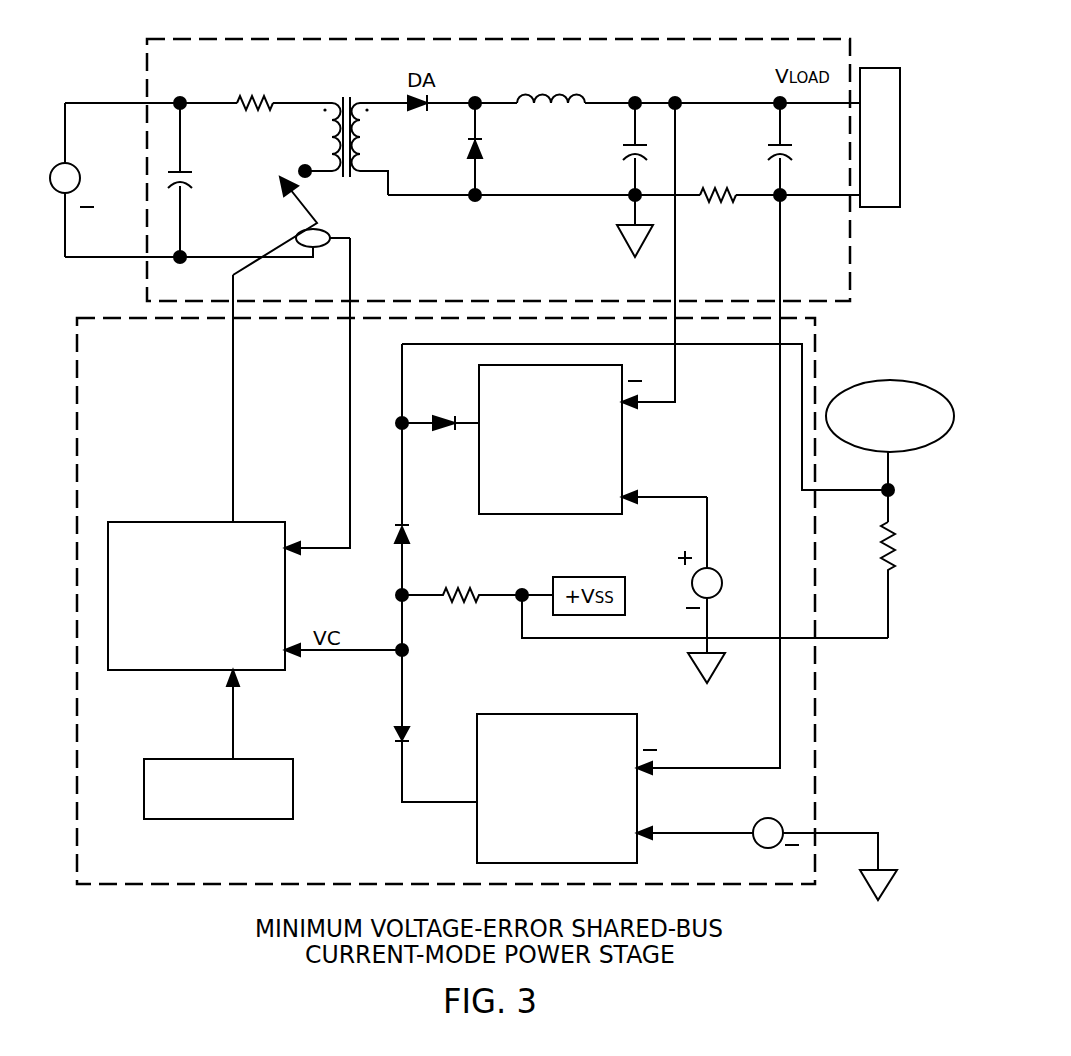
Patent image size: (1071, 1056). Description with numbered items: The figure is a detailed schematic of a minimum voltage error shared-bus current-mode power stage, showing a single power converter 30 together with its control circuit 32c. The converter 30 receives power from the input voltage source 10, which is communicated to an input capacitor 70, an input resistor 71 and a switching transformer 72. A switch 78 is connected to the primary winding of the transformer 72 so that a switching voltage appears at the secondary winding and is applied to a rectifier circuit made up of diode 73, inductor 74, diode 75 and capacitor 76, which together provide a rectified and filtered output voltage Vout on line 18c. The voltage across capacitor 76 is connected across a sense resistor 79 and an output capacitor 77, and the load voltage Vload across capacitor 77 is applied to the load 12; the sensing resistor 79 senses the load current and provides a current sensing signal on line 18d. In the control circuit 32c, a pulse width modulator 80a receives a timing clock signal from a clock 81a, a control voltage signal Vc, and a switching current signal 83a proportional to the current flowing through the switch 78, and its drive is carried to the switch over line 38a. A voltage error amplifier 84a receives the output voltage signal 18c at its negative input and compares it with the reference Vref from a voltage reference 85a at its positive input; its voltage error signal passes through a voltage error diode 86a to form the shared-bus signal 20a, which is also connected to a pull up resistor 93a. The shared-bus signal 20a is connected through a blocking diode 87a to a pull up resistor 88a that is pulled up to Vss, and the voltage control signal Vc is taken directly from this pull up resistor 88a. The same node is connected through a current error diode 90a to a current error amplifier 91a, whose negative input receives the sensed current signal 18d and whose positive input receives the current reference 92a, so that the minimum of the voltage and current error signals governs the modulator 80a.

The input voltage source 10 is at (70, 165).
The load 12 is at (872, 66).
The output voltage signal 18c is at (675, 290).
The output current sensing signal 18d is at (778, 452).
The shared-bus signal 20a is at (878, 380).
The power converter 30 is at (428, 39).
The control circuit 32c is at (398, 883).
The switch drive line 38a is at (233, 432).
The input capacitor 70 is at (190, 172).
The input resistor 71 is at (267, 100).
The switching transformer 72 is at (356, 100).
The diode 73 is at (410, 110).
The inductor 74 is at (577, 100).
The diode 75 is at (465, 155).
The capacitor 76 is at (620, 150).
The output capacitor 77 is at (770, 145).
The switch 78 is at (308, 214).
The sense resistor 79 is at (703, 190).
The pulse width modulator 80a is at (120, 522).
The clock 81a is at (144, 800).
The switching current signal 83a is at (350, 413).
The voltage error amplifier 84a is at (520, 515).
The voltage reference 85a is at (722, 583).
The voltage error diode 86a is at (434, 420).
The blocking diode 87a is at (410, 545).
The pull up resistor 88a is at (448, 605).
The current error diode 90a is at (413, 732).
The current error amplifier 91a is at (520, 713).
The current reference voltage 92a is at (770, 850).
The pull up resistor 93a is at (875, 568).